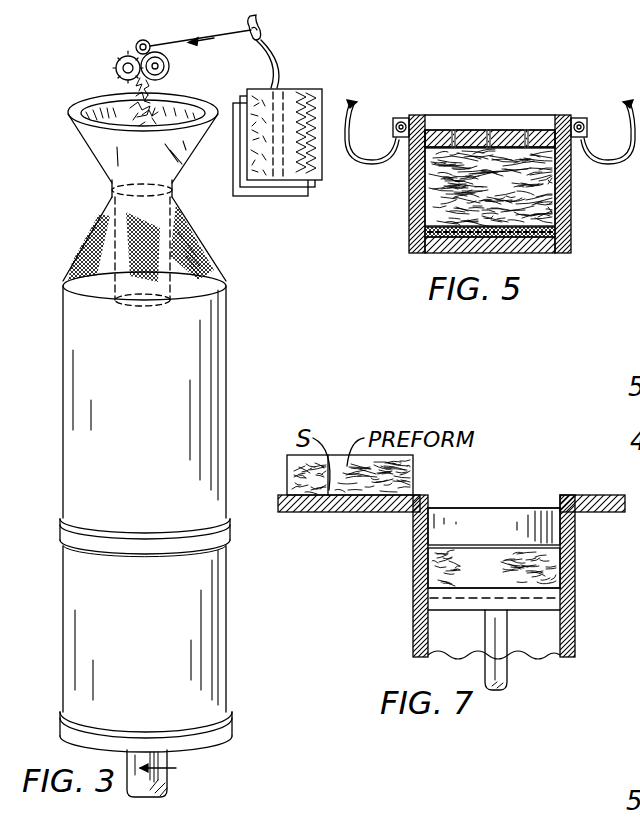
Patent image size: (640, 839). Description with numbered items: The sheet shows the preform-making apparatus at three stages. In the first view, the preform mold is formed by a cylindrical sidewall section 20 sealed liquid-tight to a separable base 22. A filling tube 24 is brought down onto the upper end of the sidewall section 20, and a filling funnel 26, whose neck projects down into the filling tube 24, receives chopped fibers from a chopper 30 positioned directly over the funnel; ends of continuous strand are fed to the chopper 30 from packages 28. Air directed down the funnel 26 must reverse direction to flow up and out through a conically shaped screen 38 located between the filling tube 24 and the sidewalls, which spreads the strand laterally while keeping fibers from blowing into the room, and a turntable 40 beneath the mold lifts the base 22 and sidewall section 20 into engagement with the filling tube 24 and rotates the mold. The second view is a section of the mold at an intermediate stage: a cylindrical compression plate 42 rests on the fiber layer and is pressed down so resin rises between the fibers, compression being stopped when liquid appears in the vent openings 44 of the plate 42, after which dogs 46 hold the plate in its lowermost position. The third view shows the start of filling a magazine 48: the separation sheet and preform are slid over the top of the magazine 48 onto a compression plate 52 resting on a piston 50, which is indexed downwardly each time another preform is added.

In FIG. 3, the cylindrical sidewall section 20 is at (228, 585).
In FIG. 5, the cylindrical sidewall section 20 is at (566, 183).
In FIG. 3, the separable base 22 is at (66, 728).
In FIG. 5, the separable base 22 is at (548, 254).
In FIG. 3, the filling tube 24 is at (228, 300).
In FIG. 3, the filling funnel 26 is at (92, 156).
In FIG. 3, the packages 28 is at (300, 176).
In FIG. 3, the chopper 30 is at (130, 46).
In FIG. 3, the conically shaped screen 38 is at (96, 228).
In FIG. 3, the turntable 40 is at (172, 755).
In FIG. 5, the cylindrical compression plate 42 is at (446, 96).
In FIG. 5, the vent openings 44 is at (526, 130).
In FIG. 5, the dogs 46 is at (628, 104).
In FIG. 7, the magazine 48 is at (413, 561).
In FIG. 7, the piston 50 is at (456, 610).
In FIG. 7, the compression plate 52 is at (514, 476).